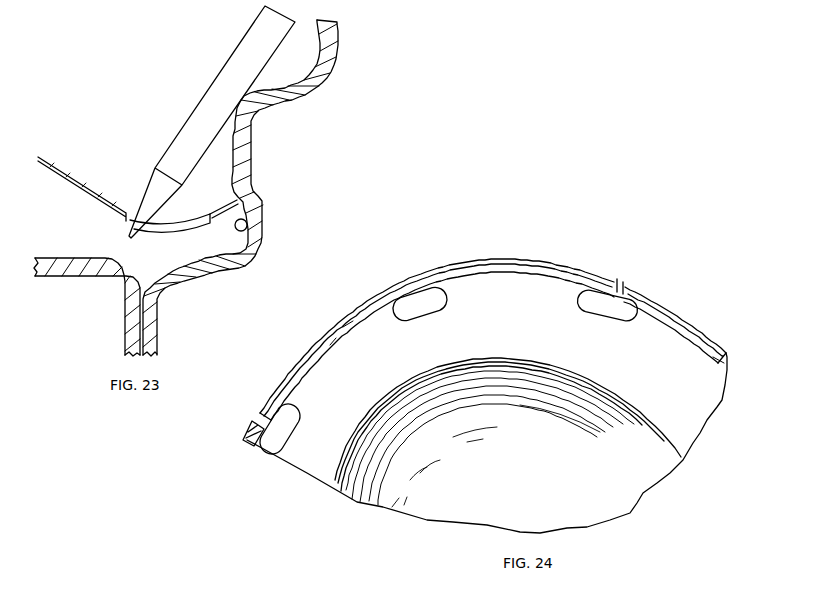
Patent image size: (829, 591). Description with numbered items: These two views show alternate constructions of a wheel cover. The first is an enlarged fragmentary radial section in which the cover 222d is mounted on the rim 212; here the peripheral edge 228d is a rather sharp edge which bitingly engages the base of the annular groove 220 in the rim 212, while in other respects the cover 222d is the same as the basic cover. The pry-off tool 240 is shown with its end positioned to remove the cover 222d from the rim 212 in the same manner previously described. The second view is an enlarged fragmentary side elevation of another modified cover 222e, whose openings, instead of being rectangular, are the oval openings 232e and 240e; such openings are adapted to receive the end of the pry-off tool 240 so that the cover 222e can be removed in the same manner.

In FIG. 23, the rim 212 is at (260, 152).
In FIG. 23, the pry-off tool 240 is at (203, 118).
In FIG. 23, the cover 222d is at (57, 172).
In FIG. 23, the edge 228d is at (238, 201).
In FIG. 23, the annular groove 220 is at (247, 227).
In FIG. 24, the cover 222e is at (526, 253).
In FIG. 24, the oval opening 240e is at (441, 300).
In FIG. 24, the oval opening 232e is at (634, 318).